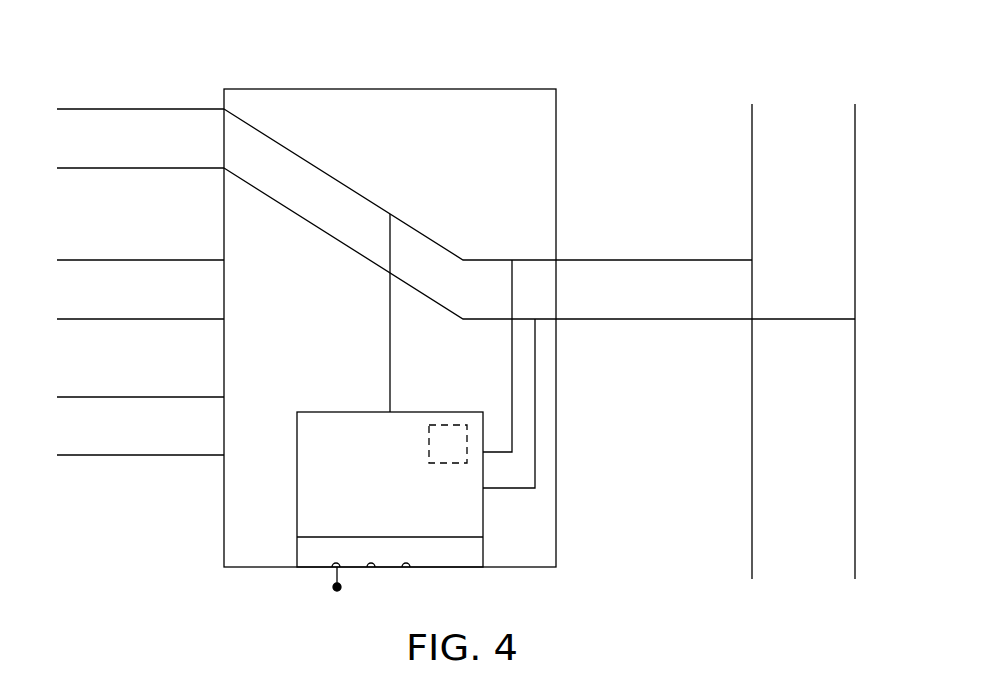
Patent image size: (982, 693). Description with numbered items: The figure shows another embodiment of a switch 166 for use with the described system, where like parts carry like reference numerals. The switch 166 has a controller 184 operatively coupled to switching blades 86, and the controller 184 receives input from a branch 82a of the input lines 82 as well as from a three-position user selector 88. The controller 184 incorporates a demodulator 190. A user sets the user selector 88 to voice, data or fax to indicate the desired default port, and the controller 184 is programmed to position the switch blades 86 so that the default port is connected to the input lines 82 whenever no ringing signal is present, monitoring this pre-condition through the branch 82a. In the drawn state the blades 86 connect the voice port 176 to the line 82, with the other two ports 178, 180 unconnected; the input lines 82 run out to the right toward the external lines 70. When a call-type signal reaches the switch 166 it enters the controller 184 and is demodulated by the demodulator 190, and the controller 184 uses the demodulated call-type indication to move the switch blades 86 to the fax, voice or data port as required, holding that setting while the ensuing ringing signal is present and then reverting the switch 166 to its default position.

The switch 166 is at (448, 56).
The voice port 176 is at (221, 105).
The second pair of optical fibers 178 is at (221, 256).
The third pair of optical fibers 180 is at (221, 394).
The switching blades 86 is at (418, 228).
The input lines 82 is at (560, 255).
The branch of the input lines 82a is at (535, 425).
The bus 70 is at (752, 134).
The controller 184 is at (307, 430).
The demodulator 190 is at (449, 426).
The three-position user selector 88 is at (333, 572).